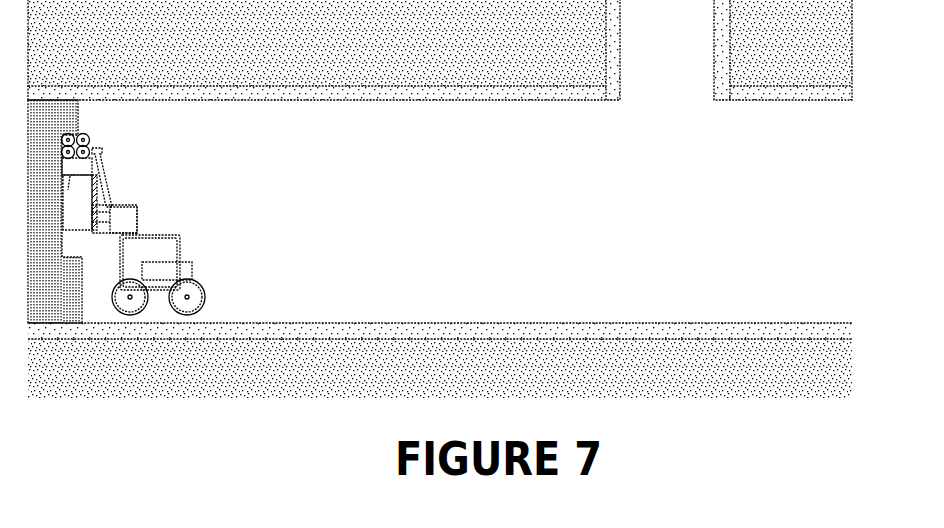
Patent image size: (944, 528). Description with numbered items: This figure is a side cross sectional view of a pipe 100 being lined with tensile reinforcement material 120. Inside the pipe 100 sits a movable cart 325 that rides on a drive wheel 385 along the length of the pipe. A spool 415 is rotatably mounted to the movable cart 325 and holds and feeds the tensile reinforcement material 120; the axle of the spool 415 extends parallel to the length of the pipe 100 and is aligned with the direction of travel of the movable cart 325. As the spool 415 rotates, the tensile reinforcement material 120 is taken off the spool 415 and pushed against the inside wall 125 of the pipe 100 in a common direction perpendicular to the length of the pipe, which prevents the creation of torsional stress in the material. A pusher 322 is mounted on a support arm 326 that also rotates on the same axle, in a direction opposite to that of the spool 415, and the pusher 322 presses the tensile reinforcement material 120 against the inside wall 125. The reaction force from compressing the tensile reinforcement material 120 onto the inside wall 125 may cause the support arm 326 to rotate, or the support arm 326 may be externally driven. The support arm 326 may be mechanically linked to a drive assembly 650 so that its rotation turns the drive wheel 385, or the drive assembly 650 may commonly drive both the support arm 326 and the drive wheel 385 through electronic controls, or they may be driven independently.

The pipe 100 is at (788, 216).
The tensile reinforcement material 120 is at (73, 237).
The inside wall of the pipe 125 is at (548, 100).
The pusher 322 is at (87, 140).
The movable cart 325 is at (202, 240).
The support arm 326 is at (108, 188).
The drive wheel 385 is at (202, 292).
The spool 415 is at (92, 248).
The drive assembly 650 is at (192, 267).